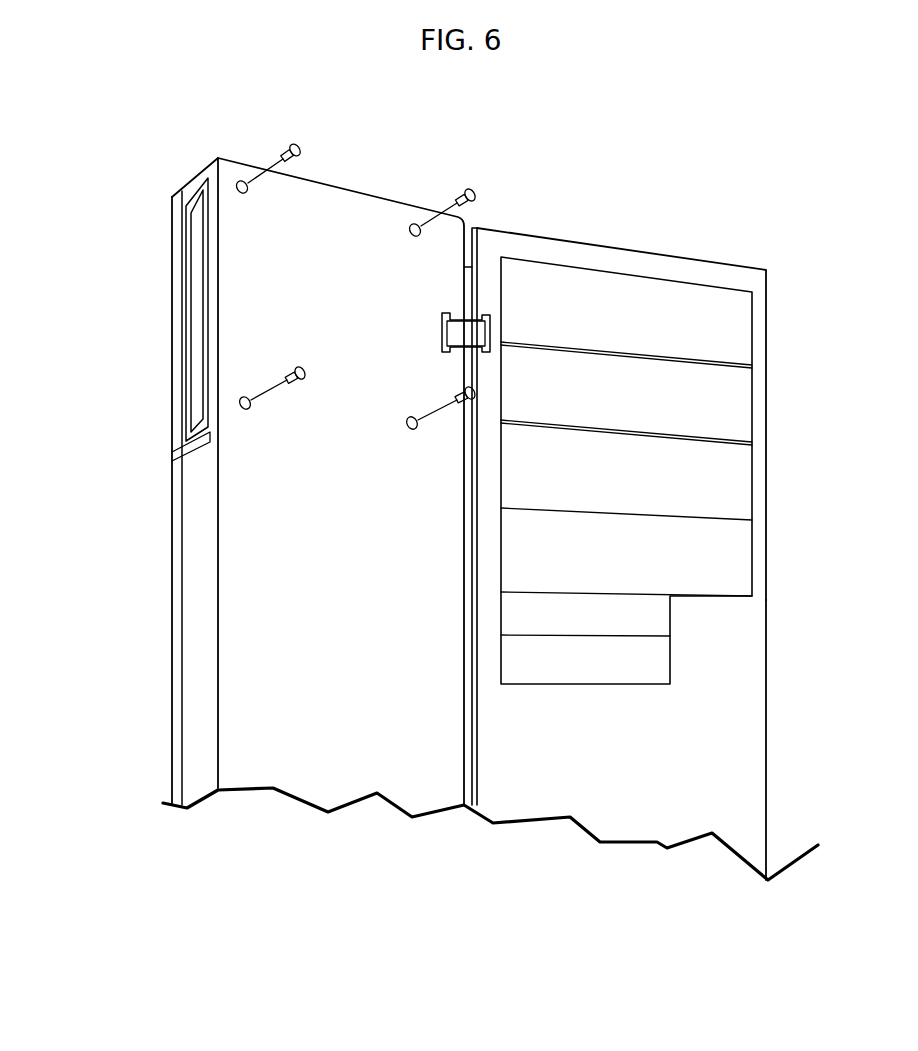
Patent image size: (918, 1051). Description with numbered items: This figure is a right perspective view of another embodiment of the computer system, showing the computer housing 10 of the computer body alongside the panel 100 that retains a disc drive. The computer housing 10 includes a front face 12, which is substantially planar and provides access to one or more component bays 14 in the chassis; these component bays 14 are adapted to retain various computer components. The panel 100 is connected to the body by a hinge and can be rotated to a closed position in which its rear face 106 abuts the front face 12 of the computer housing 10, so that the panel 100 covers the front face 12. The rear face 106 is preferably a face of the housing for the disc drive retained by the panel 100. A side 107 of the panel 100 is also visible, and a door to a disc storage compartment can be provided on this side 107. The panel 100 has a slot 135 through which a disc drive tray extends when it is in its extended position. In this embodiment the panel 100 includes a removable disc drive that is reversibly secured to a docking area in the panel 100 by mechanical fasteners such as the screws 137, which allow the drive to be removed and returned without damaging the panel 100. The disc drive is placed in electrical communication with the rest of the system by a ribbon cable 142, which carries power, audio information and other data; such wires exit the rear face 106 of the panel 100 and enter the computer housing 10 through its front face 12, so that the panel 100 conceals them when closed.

The computer housing 10 is at (767, 423).
The front face 12 is at (730, 760).
The component bays 14 is at (670, 573).
The panel 100 is at (170, 547).
The rear face 106 is at (355, 727).
The side 107 is at (195, 668).
The slot 135 is at (193, 247).
The screws 137 is at (290, 147).
The ribbon cable 142 is at (468, 332).